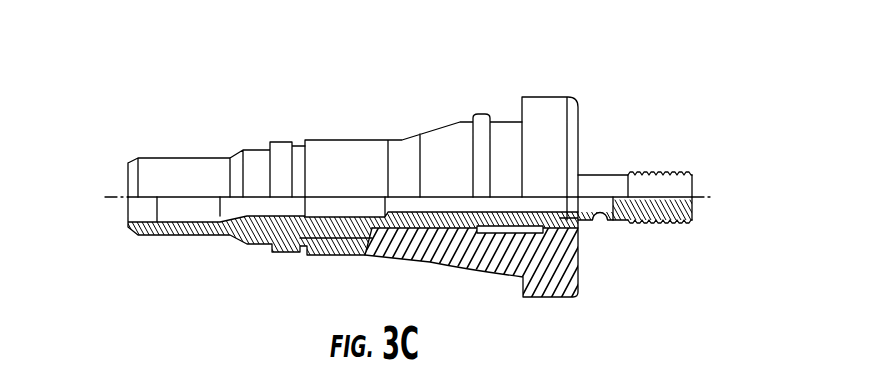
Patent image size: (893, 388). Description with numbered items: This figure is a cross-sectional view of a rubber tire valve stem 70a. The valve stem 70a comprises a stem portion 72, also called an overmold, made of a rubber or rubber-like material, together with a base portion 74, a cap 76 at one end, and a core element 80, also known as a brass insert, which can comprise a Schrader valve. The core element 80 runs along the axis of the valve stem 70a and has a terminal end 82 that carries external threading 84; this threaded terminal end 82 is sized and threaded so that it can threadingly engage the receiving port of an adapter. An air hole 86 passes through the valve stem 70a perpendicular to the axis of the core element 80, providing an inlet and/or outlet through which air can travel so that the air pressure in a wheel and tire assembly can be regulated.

The valve stem 70a is at (187, 86).
The stem portion 72 is at (342, 140).
The base portion 74 is at (551, 97).
The cap 76 is at (198, 158).
The core element 80 is at (643, 163).
The terminal end 82 is at (695, 187).
The external threading 84 is at (662, 172).
The air hole 86 is at (602, 214).